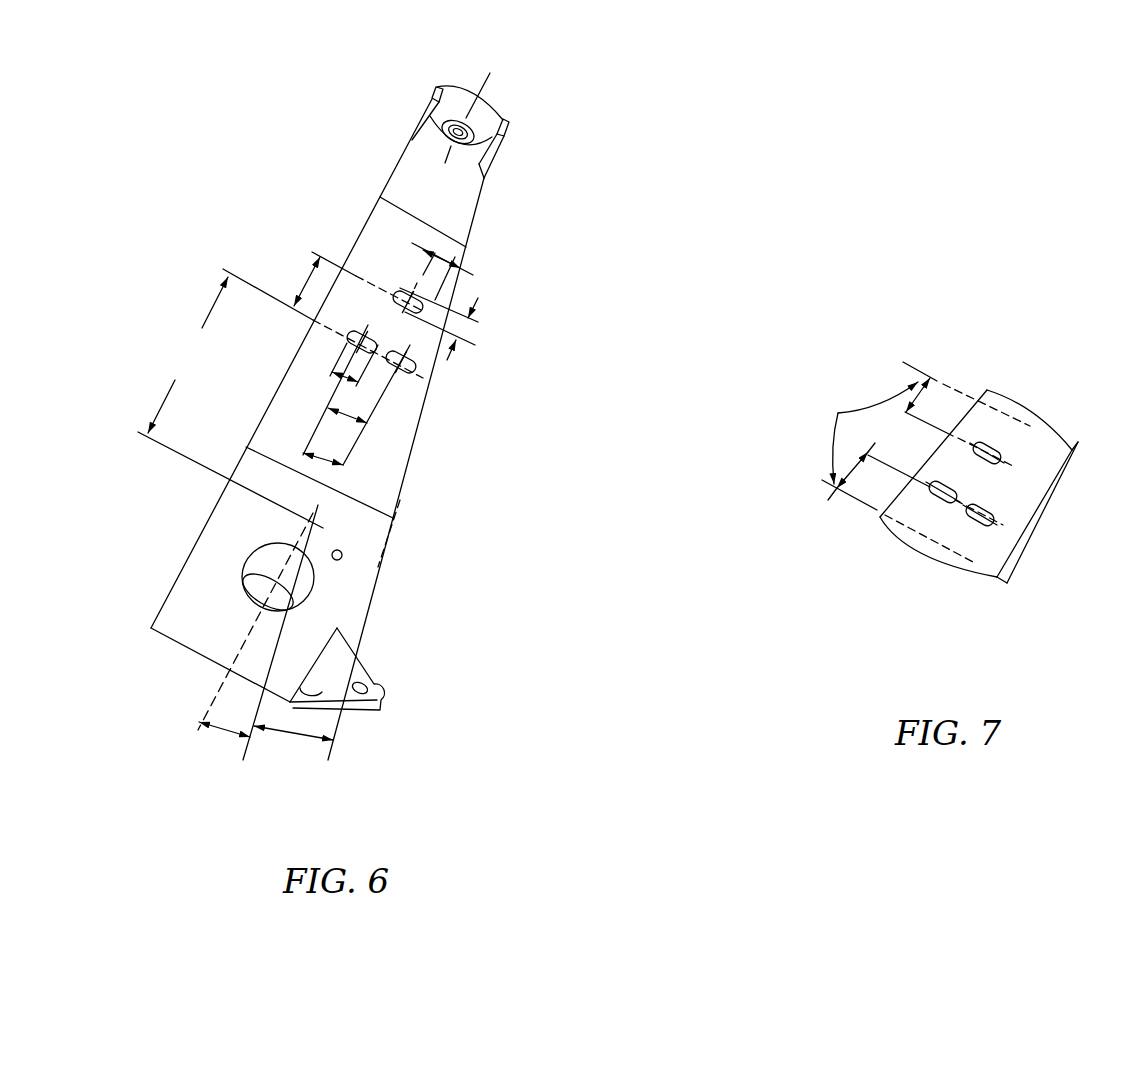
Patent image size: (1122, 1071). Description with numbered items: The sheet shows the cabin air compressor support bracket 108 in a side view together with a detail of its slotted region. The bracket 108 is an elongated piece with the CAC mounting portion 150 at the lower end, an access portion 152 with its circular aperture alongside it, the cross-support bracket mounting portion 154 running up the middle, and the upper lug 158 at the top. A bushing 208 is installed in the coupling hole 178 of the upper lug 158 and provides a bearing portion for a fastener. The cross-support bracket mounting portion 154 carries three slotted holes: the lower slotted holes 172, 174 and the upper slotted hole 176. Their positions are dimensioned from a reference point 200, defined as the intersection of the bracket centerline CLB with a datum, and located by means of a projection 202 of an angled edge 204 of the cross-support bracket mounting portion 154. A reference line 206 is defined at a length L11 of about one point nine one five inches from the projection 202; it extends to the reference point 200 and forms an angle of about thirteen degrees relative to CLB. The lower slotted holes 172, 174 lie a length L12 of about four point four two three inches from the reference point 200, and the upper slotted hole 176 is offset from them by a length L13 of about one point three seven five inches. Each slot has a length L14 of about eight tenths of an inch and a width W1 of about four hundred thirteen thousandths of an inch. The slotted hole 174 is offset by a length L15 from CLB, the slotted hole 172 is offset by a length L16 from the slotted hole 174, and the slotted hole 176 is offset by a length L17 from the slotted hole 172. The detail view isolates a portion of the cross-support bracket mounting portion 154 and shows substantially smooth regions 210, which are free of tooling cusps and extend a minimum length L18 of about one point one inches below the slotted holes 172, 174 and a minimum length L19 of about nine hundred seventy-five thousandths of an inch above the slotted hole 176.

In FIG. 6, the first CAC support bracket 108 is at (250, 160).
In FIG. 6, the CAC mounting portion 150 is at (363, 710).
In FIG. 6, the access portion 152 is at (200, 641).
In FIG. 6, the cross-support bracket mounting portion 154 is at (397, 467).
In FIG. 7, the cross-support bracket mounting portion 154 is at (1037, 410).
In FIG. 6, the upper lug 158 is at (440, 92).
In FIG. 6, the slotted hole 172 is at (410, 383).
In FIG. 7, the slotted hole 172 is at (943, 484).
In FIG. 6, the slotted hole 174 is at (347, 341).
In FIG. 7, the slotted hole 174 is at (995, 512).
In FIG. 6, the upper slotted hole 176 is at (393, 295).
In FIG. 7, the upper slotted hole 176 is at (1012, 463).
In FIG. 6, the coupling hole 178 is at (457, 146).
In FIG. 6, the reference point 200 is at (305, 521).
In FIG. 6, the projection 202 is at (374, 590).
In FIG. 6, the angled edge 204 is at (395, 506).
In FIG. 6, the reference line 206 is at (247, 755).
In FIG. 6, the bushing 208 is at (490, 141).
In FIG. 7, the substantially smooth regions 210 is at (855, 433).
In FIG. 6, the element CLB is at (385, 547).
In FIG. 6, the length L11 is at (292, 742).
In FIG. 6, the length L12 is at (188, 355).
In FIG. 6, the length L13 is at (295, 293).
In FIG. 6, the length L14 is at (390, 418).
In FIG. 6, the length L15 is at (305, 453).
In FIG. 6, the length L16 is at (326, 397).
In FIG. 6, the length L17 is at (450, 258).
In FIG. 7, the minimum length L18 is at (830, 500).
In FIG. 7, the minimum length L19 is at (923, 400).
In FIG. 6, the width W1 is at (472, 336).